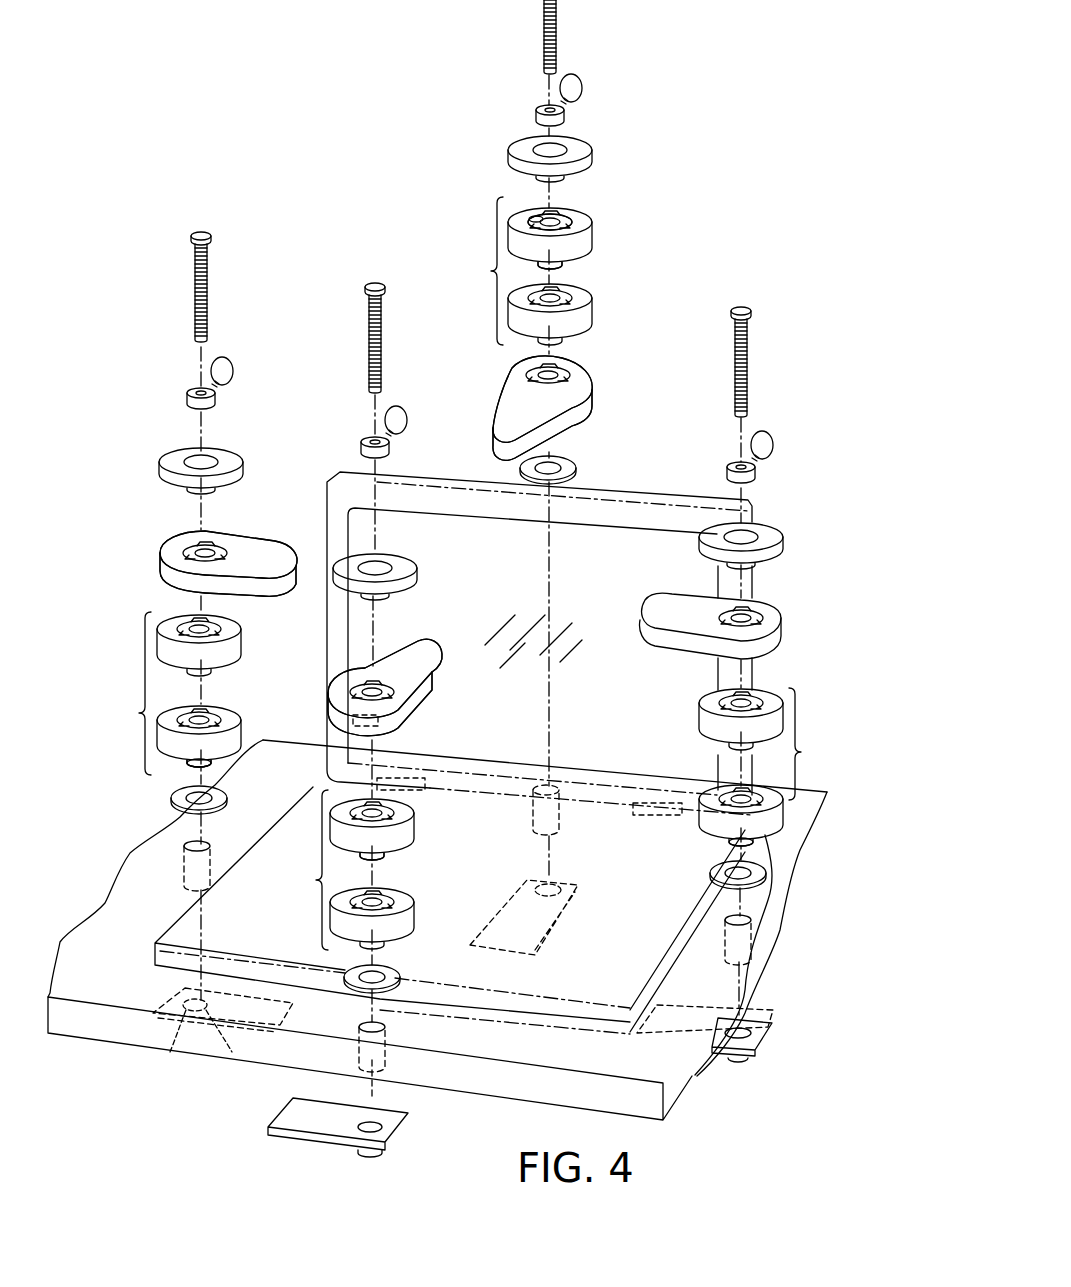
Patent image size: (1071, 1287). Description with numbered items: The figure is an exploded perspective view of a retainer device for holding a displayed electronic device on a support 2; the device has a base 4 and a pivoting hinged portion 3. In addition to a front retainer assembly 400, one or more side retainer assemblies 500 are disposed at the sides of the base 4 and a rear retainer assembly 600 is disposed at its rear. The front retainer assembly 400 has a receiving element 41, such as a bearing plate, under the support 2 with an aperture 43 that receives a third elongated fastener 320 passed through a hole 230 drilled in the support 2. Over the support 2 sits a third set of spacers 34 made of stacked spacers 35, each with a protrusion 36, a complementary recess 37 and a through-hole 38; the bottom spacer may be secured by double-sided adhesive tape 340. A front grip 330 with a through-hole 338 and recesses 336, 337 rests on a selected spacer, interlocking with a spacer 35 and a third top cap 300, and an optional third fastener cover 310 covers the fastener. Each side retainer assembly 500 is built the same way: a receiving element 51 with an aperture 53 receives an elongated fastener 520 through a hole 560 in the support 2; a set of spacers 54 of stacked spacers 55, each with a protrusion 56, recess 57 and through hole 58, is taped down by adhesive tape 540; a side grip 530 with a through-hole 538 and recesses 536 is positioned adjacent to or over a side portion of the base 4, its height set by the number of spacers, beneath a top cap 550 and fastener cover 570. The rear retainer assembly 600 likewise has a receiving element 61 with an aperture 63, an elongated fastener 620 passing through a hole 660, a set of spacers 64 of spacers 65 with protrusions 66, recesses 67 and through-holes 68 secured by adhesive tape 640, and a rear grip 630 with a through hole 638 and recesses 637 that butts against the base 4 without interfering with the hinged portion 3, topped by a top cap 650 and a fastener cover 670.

The support 2 is at (808, 798).
The hinged portion 3 is at (629, 715).
The base 4 is at (617, 1002).
The third set of spacers 34 is at (320, 880).
The spacer 35 is at (417, 830).
The protrusion 36 is at (385, 857).
The recess 37 is at (390, 895).
The through-hole 38 is at (340, 790).
The receiving element 41 is at (395, 1140).
The aperture 43 is at (356, 1130).
The receiving element 51 is at (240, 1035).
The aperture 53 is at (185, 1040).
The set of spacers 54 is at (140, 716).
The spacer 55 is at (180, 768).
The protrusion 56 is at (225, 770).
The recess 57 is at (180, 650).
The through hole 58 is at (223, 704).
The receiving element 61 is at (570, 930).
The aperture 63 is at (575, 886).
The set of spacers 64 is at (491, 271).
The spacer 65 is at (592, 235).
The protrusion 66 is at (580, 268).
The recess 67 is at (528, 214).
The through-hole 68 is at (565, 216).
The hole 230 is at (385, 1027).
The third top cap 300 is at (418, 570).
The third fastener cover 310 is at (365, 445).
The third elongated fastener 320 is at (369, 330).
The front grip 330 is at (434, 672).
The recess 336 is at (380, 722).
The recess 337 is at (345, 697).
The through-hole 338 is at (370, 688).
The double-sided adhesive tape 340 is at (398, 976).
The front retainer assembly 400 is at (309, 238).
The side retainer assembly 500 is at (146, 272).
The elongated fastener 520 is at (195, 318).
The side grip 530 is at (245, 540).
The recess 536 is at (165, 552).
The through-hole 538 is at (200, 548).
The double-sided adhesive tape 540 is at (175, 805).
The top cap 550 is at (160, 465).
The hole 560 is at (182, 870).
The fastener cover 570 is at (188, 395).
The rear retainer assembly 600 is at (382, 82).
The elongated fastener 620 is at (556, 10).
The rear grip 630 is at (592, 388).
The recess 637 is at (530, 360).
The through hole 638 is at (570, 372).
The double-sided adhesive tape 640 is at (565, 462).
The top cap 650 is at (578, 140).
The hole 660 is at (565, 826).
The fastener cover 670 is at (535, 113).